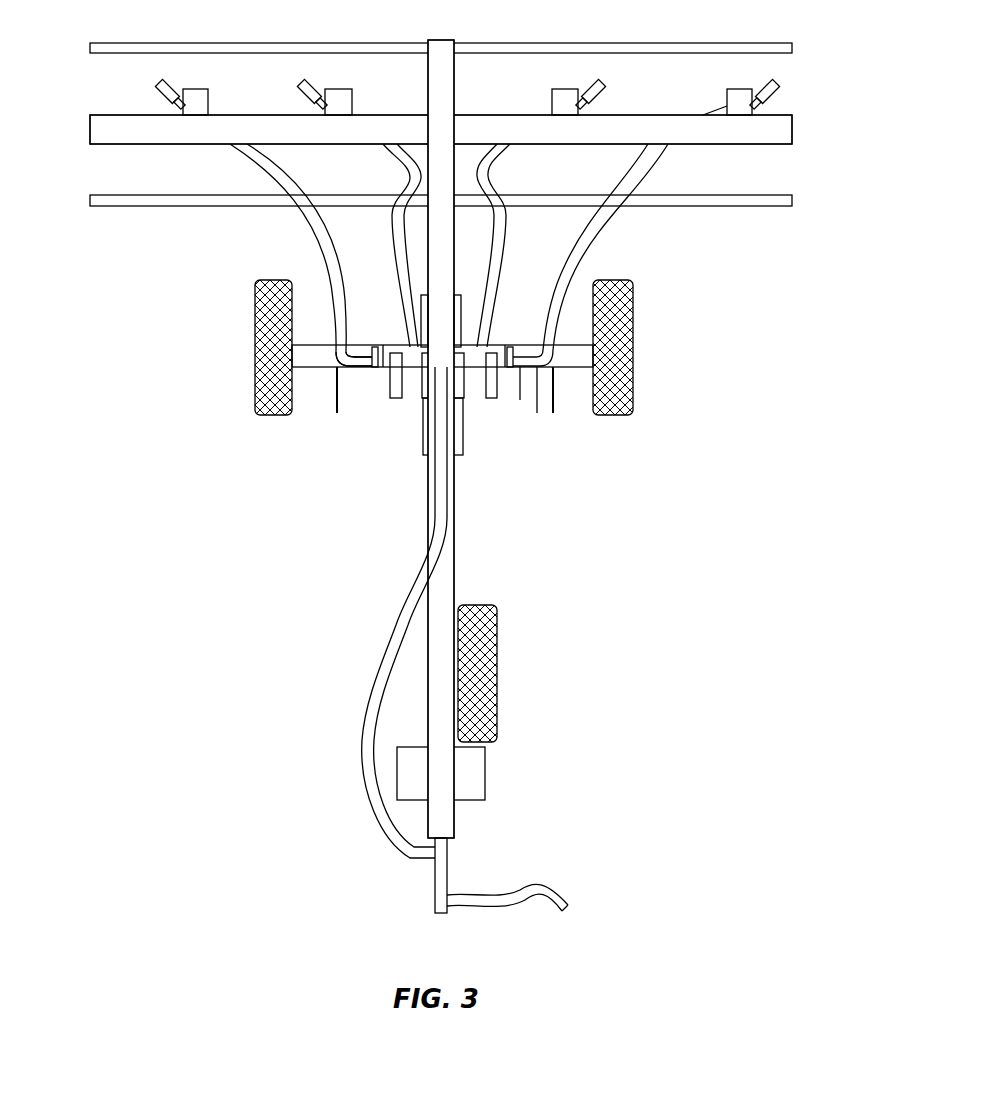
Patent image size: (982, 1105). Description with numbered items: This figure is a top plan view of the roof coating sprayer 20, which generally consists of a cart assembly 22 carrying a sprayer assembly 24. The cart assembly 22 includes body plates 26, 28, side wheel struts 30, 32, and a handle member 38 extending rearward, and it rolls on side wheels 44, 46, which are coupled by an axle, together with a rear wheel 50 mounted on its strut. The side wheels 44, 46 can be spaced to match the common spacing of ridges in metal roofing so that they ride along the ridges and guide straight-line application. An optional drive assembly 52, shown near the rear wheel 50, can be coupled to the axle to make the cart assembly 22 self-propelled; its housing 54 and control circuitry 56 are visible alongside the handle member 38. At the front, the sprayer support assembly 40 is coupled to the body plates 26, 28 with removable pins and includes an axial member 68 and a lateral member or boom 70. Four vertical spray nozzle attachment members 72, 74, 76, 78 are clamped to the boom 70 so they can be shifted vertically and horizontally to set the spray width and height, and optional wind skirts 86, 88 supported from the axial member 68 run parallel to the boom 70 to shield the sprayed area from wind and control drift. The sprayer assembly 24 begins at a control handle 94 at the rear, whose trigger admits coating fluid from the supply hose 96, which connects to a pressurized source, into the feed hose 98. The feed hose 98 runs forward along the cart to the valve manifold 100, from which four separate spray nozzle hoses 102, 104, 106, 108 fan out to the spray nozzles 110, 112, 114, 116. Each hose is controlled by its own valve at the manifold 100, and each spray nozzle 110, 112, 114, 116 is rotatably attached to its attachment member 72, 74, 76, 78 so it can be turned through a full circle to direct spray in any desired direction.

The roof coating sprayer 20 is at (207, 510).
The cart assembly 22 is at (430, 545).
The sprayer assembly 24 is at (473, 362).
The body plate 26 is at (423, 432).
The body plate 28 is at (464, 445).
The side wheel strut 30 is at (315, 367).
The side wheel strut 32 is at (540, 403).
The handle member 38 is at (455, 590).
The sprayer support assembly 40 is at (130, 130).
The side wheel 44 is at (253, 385).
The side wheel 46 is at (634, 385).
The rear wheel 50 is at (495, 722).
The drive assembly 52 is at (522, 400).
The housing 54 is at (573, 357).
The control circuitry 56 is at (478, 772).
The axial member 68 is at (447, 273).
The lateral member 70 is at (790, 130).
The vertical spray nozzle attachment member 72 is at (195, 95).
The vertical spray nozzle attachment member 74 is at (338, 95).
The vertical spray nozzle attachment member 76 is at (560, 95).
The vertical spray nozzle attachment member 78 is at (742, 95).
The wind skirt 86 is at (790, 206).
The wind skirt 88 is at (790, 46).
The control handle 94 is at (446, 880).
The supply hose 96 is at (562, 896).
The feed hose 98 is at (360, 736).
The valve manifold 100 is at (345, 336).
The spray nozzle hose 102 is at (305, 222).
The spray nozzle hose 104 is at (395, 245).
The spray nozzle hose 106 is at (500, 226).
The spray nozzle hose 108 is at (560, 250).
The spray nozzle 110 is at (160, 95).
The spray nozzle 112 is at (310, 90).
The spray nozzle 114 is at (598, 88).
The spray nozzle 116 is at (780, 95).